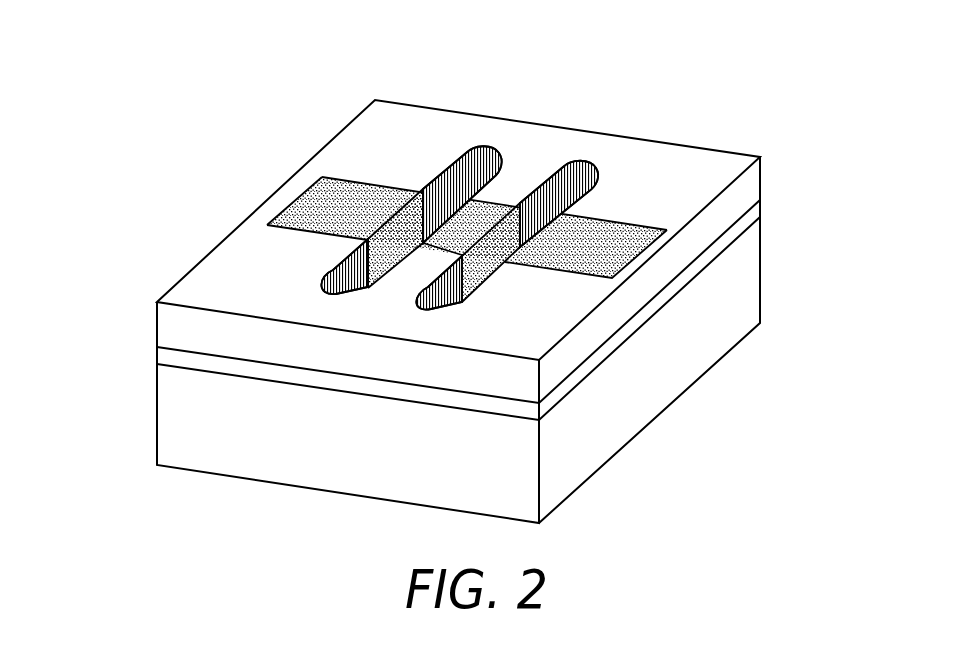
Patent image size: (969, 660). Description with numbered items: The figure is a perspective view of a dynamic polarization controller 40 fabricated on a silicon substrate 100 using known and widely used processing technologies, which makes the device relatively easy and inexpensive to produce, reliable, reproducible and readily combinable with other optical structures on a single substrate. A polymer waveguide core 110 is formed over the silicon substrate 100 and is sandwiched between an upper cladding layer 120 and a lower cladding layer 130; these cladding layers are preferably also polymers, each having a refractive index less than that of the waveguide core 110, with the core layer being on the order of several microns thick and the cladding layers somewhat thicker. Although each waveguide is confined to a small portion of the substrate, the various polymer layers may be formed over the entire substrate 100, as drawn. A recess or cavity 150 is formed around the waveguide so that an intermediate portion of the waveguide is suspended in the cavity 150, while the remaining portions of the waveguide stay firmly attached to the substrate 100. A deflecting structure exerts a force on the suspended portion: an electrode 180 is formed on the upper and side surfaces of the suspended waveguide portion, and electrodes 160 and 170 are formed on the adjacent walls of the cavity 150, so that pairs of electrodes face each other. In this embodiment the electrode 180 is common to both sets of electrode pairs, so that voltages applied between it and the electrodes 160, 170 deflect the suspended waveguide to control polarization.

The dynamic polarization controller 40 is at (744, 110).
The silicon substrate 100 is at (390, 473).
The polymer waveguide core 110 is at (350, 377).
The upper cladding layer 120 is at (167, 327).
The lower cladding layer 130 is at (218, 364).
The cavity 150 is at (592, 176).
The electrode 160 is at (320, 200).
The electrode 170 is at (645, 224).
The electrode 180 is at (507, 203).